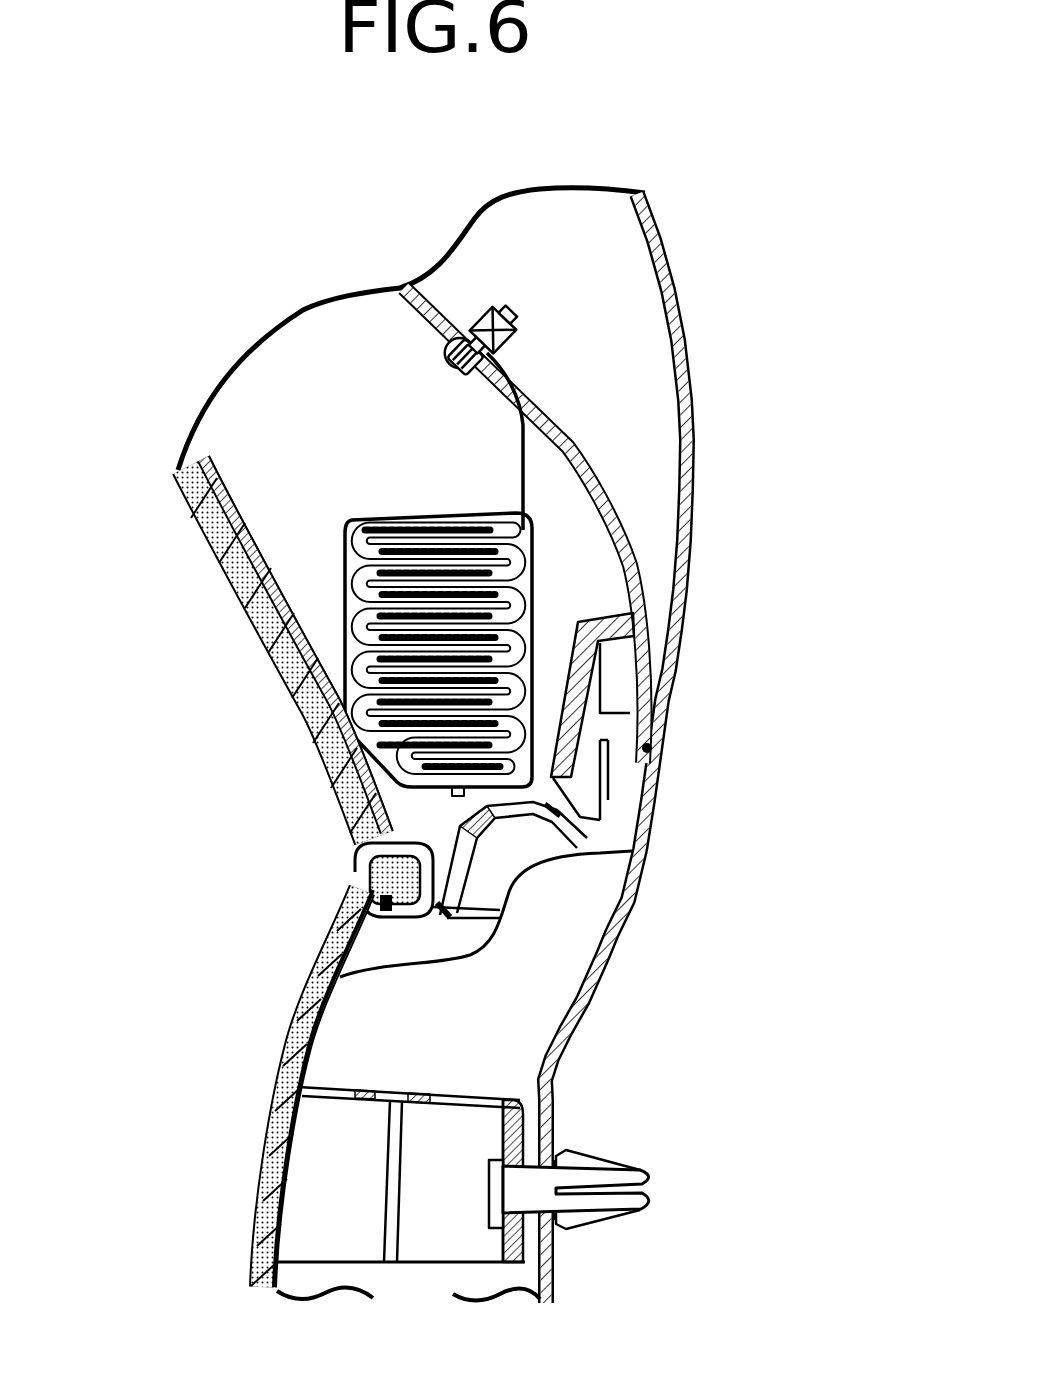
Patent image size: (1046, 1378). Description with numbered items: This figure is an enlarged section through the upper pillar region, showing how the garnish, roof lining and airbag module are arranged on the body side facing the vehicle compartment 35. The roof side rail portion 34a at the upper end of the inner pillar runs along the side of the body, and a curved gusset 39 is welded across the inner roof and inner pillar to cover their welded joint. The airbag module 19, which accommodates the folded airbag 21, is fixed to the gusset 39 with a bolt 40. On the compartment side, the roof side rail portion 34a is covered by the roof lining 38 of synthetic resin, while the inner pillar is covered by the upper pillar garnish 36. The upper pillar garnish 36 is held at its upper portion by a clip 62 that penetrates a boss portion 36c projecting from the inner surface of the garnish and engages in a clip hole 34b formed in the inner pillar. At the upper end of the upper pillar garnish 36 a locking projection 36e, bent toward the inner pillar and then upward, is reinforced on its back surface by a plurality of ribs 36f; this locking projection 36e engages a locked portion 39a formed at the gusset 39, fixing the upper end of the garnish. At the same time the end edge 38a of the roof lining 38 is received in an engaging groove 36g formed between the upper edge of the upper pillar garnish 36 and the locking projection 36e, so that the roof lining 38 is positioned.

The airbag module 19 is at (407, 602).
The airbag 21 is at (343, 557).
The roof side rail portion 34a is at (676, 310).
The clip hole 34b is at (568, 1205).
The vehicle compartment 35 is at (122, 857).
The upper pillar garnish 36 is at (253, 1137).
The boss portion 36c is at (437, 1093).
The locking projection 36e is at (537, 815).
The ribs 36f is at (578, 833).
The engaging groove 36g is at (350, 855).
The roof lining 38 is at (222, 571).
The end edge 38a is at (408, 920).
The gusset 39 is at (570, 422).
The locked portion 39a is at (573, 660).
The bolt 40 is at (447, 372).
The clip 62 is at (610, 1165).